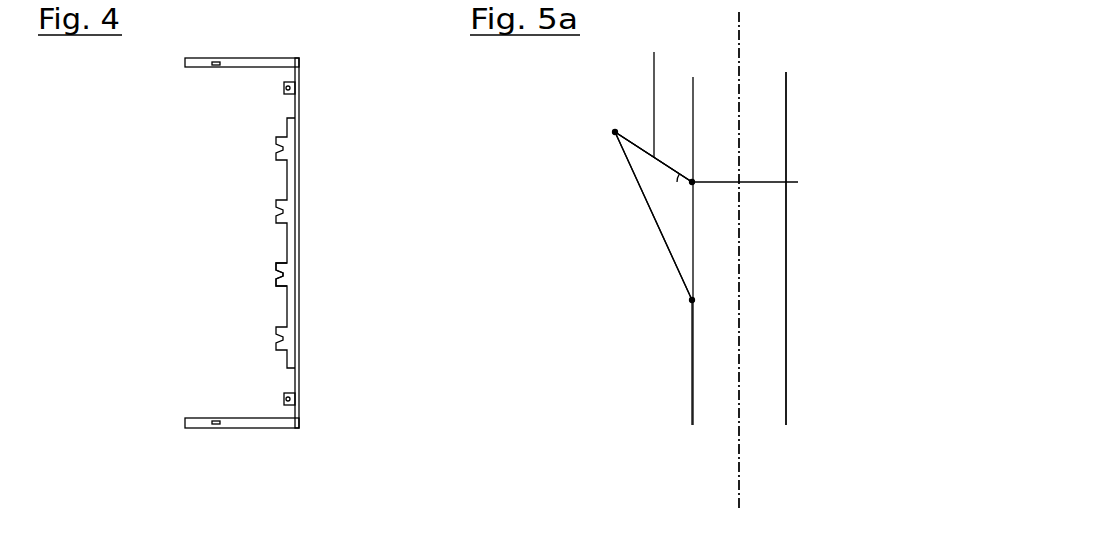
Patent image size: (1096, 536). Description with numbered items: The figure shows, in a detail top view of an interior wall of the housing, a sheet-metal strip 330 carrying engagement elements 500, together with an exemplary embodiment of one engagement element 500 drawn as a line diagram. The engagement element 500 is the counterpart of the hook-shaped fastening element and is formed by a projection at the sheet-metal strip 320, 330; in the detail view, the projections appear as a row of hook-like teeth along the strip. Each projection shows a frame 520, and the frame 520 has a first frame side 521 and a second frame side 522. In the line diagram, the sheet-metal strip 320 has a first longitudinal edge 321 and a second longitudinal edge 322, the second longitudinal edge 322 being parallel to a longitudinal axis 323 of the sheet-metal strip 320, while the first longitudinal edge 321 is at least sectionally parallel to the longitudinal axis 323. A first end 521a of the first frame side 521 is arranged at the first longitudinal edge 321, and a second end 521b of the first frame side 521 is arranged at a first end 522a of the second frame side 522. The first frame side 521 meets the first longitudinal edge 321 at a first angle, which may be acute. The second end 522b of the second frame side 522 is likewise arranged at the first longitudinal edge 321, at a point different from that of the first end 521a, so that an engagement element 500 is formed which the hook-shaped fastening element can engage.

In FIG. 4, the sheet-metal strip 330 is at (299, 138).
In FIG. 4, the engagement element 500 is at (270, 234).
In FIG. 5A, the engagement element 500 is at (667, 198).
In FIG. 4, the frame 520 is at (266, 302).
In FIG. 5A, the first frame side 521 is at (646, 88).
In FIG. 5A, the second end of the first frame side 521b is at (615, 132).
In FIG. 5A, the first end of the second frame side 522a is at (589, 152).
In FIG. 5A, the second frame side 522 is at (638, 185).
In FIG. 5A, the second end of the second frame side 522b is at (692, 300).
In FIG. 5A, the first end of the first frame side 521a is at (787, 188).
In FIG. 5A, the first longitudinal edge 321 is at (693, 390).
In FIG. 5A, the second longitudinal edge 322 is at (787, 397).
In FIG. 5A, the longitudinal axis 323 is at (739, 29).
In FIG. 5A, the sheet-metal strip 320 is at (755, 327).